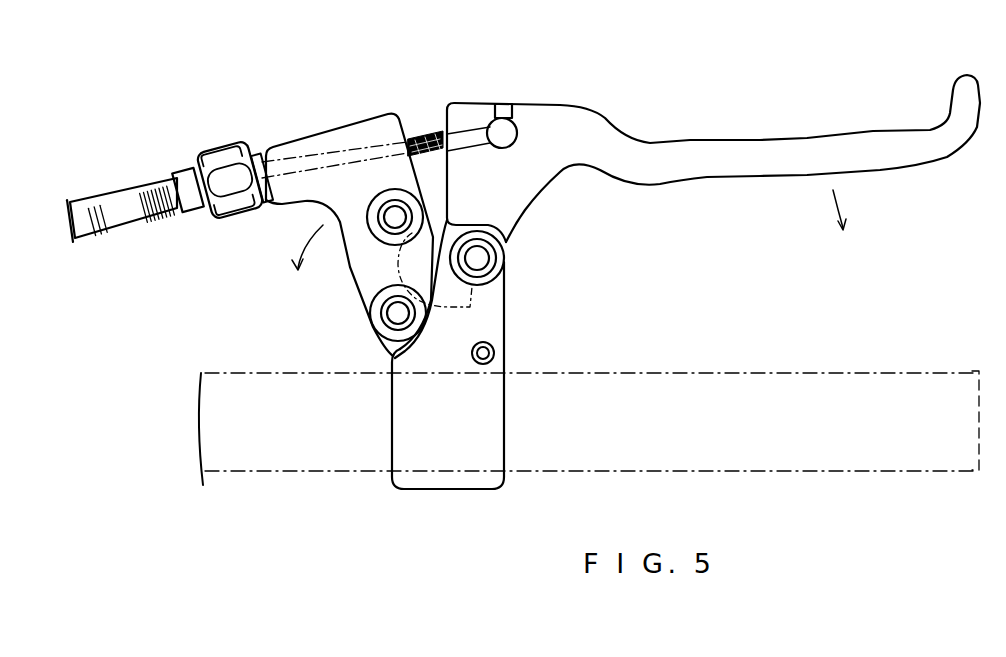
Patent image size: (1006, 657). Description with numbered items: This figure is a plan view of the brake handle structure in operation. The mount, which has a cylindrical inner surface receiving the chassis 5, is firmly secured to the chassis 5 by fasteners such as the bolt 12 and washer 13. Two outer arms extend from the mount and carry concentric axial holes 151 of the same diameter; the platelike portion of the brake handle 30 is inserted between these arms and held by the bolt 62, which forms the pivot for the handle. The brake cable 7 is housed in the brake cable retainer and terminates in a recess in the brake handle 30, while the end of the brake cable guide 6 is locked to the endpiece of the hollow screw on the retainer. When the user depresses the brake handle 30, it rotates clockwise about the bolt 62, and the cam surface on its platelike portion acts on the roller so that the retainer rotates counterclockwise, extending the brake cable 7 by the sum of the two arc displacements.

The chassis 5 is at (870, 382).
The brake cable guide 6 is at (158, 184).
The brake cable 7 is at (423, 137).
The bolt 12 is at (492, 346).
The washer 13 is at (495, 354).
The brake handle 30 is at (805, 142).
The bolt 62 is at (506, 250).
The concentric axial holes 151 is at (485, 261).